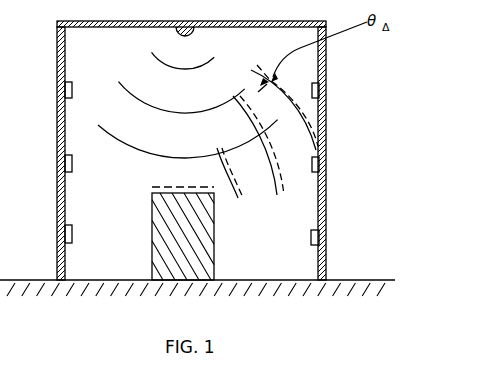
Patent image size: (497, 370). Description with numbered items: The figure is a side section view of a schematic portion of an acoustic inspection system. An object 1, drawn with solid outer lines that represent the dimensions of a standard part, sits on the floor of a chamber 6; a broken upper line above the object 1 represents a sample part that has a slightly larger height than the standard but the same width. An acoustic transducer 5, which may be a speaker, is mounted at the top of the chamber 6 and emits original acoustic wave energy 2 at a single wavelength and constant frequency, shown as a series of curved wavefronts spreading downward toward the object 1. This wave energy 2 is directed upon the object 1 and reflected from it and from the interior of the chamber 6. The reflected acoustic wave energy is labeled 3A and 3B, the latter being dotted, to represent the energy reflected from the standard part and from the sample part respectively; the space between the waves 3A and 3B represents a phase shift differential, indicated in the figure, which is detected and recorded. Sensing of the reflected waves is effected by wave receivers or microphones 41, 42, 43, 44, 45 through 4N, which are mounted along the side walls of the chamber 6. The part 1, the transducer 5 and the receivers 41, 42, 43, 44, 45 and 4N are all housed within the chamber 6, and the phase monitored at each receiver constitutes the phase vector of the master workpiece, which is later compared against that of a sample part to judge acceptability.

The object 1 is at (203, 255).
The acoustic wave energy 2 is at (212, 62).
The reflected wave energy 3A is at (224, 194).
The reflected wave energy 3B is at (243, 187).
The wave receiver 41 is at (74, 90).
The wave receiver 42 is at (74, 165).
The wave receiver 43 is at (74, 233).
The wave receiver 44 is at (320, 93).
The wave receiver 45 is at (320, 165).
The wave receiver 4N is at (320, 236).
The acoustic transducer 5 is at (195, 33).
The chamber 6 is at (327, 70).